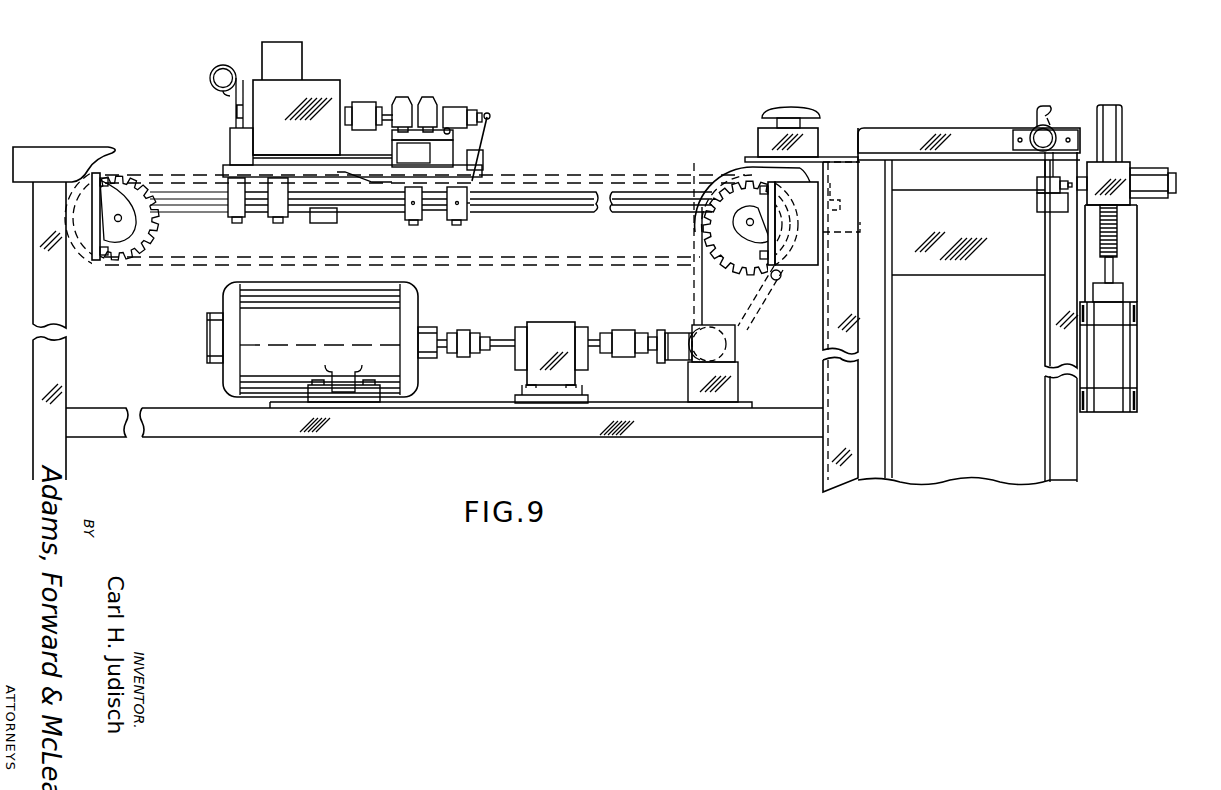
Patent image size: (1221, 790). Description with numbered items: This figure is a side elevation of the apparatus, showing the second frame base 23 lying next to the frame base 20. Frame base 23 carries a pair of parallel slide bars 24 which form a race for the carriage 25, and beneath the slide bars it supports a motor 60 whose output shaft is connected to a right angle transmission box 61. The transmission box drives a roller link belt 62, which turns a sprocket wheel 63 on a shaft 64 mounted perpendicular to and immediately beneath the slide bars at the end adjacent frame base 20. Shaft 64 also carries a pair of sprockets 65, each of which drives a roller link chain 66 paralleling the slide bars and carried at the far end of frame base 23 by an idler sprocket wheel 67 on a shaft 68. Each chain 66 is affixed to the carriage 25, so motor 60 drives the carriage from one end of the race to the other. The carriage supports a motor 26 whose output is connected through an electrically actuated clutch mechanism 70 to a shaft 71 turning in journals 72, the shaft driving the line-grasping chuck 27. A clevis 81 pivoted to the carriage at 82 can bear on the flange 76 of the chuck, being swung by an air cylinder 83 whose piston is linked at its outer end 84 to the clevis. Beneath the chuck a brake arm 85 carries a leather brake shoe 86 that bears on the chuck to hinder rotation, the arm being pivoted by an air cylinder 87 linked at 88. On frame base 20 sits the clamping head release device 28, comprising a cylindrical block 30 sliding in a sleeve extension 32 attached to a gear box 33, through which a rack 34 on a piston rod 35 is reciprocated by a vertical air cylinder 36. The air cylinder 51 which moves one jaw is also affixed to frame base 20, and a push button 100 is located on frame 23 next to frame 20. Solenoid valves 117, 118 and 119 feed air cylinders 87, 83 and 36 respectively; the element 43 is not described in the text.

The frame base 20 is at (1078, 444).
The second frame base 23 is at (526, 438).
The slide bars 24 is at (614, 214).
The carriage 25 is at (480, 168).
The motor 26 is at (318, 82).
The line-grasping chuck 27 is at (460, 107).
The clamping head release device 28 is at (1144, 245).
The cylindrical block 30 is at (1176, 178).
The sleeve extension 32 is at (1158, 168).
The gear box 33 is at (1125, 162).
The rack 34 is at (1118, 220).
The piston rod 35 is at (1120, 283).
The air cylinder 36 is at (1140, 330).
The block 43 is at (1037, 185).
The air cylinder 51 is at (1036, 134).
The motor 60 is at (418, 298).
The right angle transmission box 61 is at (736, 356).
The roller link belt 62 is at (694, 300).
The sprocket wheel 63 is at (779, 276).
The shaft 64 is at (742, 228).
The sprockets 65 is at (708, 218).
The roller link chain 66 is at (490, 268).
The idler sprocket wheel 67 is at (152, 236).
The shaft 68 is at (120, 217).
The electrically actuated clutch mechanism 70 is at (362, 102).
The shaft 71 is at (396, 97).
The journals 72 is at (430, 97).
The flange 76 is at (488, 113).
The clevis 81 is at (490, 130).
The pivot 82 is at (483, 154).
The air cylinder 83 is at (404, 196).
The outer end of piston member 84 is at (470, 205).
The brake arm 85 is at (450, 133).
The brake shoe 86 is at (437, 133).
The air cylinder 87 is at (430, 202).
The pivotal link 88 is at (450, 198).
The push button 100 is at (820, 128).
The solenoid valve 117 is at (230, 144).
The solenoid valve 118 is at (325, 220).
The solenoid valve 119 is at (1042, 208).